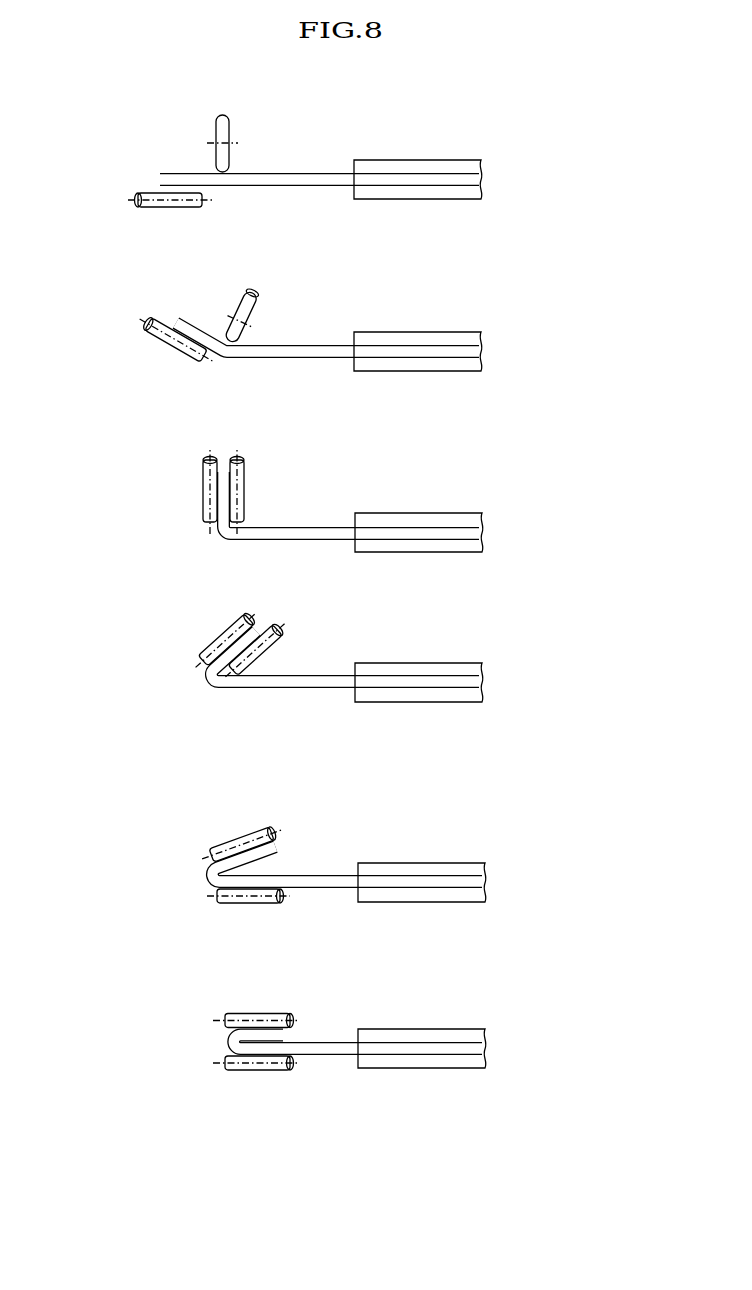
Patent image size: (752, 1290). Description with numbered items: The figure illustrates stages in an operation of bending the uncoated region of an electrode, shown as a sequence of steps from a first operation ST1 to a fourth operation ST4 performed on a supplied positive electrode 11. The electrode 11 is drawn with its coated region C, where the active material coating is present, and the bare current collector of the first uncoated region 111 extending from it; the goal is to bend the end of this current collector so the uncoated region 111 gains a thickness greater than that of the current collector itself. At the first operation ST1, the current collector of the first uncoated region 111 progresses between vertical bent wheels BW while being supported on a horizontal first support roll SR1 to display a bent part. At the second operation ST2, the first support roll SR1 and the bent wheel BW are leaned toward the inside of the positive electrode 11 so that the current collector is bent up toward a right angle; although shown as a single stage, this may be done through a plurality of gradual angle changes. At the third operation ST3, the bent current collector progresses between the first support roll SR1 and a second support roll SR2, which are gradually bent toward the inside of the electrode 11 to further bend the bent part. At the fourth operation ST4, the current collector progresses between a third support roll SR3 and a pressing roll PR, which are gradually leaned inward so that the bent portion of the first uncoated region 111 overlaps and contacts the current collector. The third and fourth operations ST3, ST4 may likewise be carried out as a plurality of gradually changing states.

The positive electrode 11 is at (287, 613).
The first uncoated region 111 is at (160, 179).
The coated region C is at (393, 160).
The bent wheel BW is at (217, 118).
The first support roll SR1 is at (136, 207).
The second support roll SR2 is at (243, 460).
The third support roll SR3 is at (218, 904).
The pressing roll PR is at (222, 848).
The first operation ST1 is at (512, 178).
The second operation ST2 is at (513, 356).
The third operation ST3 is at (552, 713).
The fourth operation ST4 is at (553, 1103).